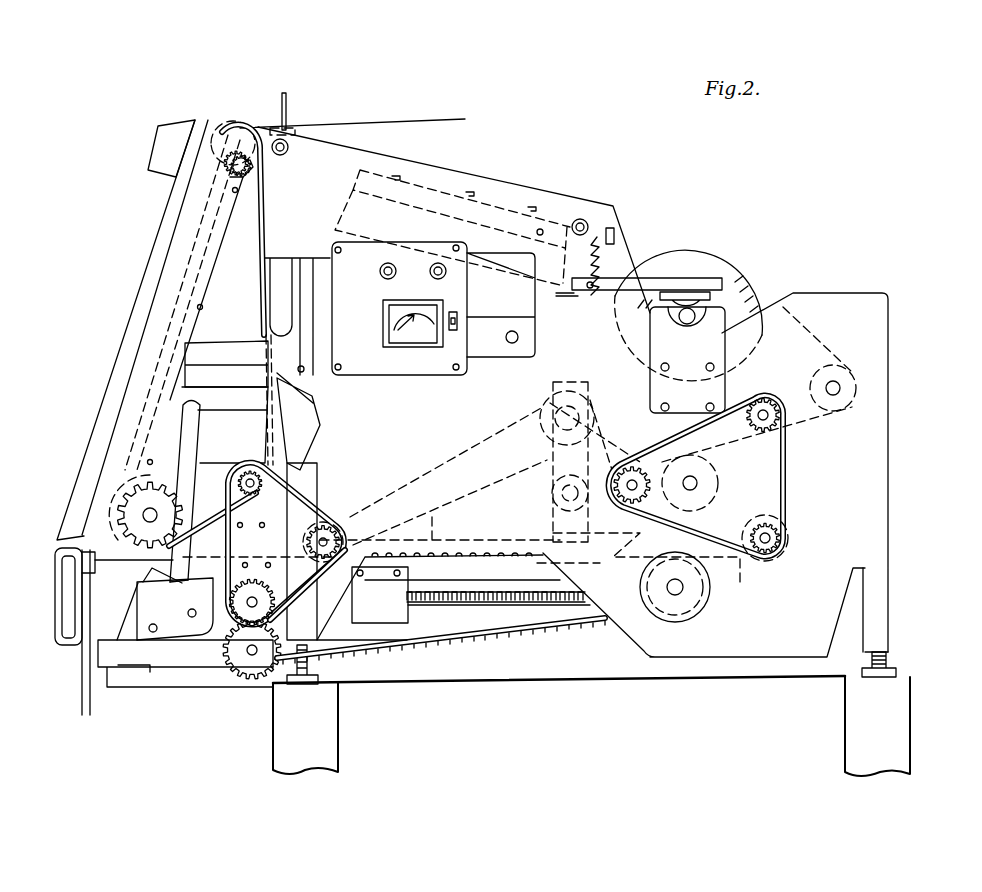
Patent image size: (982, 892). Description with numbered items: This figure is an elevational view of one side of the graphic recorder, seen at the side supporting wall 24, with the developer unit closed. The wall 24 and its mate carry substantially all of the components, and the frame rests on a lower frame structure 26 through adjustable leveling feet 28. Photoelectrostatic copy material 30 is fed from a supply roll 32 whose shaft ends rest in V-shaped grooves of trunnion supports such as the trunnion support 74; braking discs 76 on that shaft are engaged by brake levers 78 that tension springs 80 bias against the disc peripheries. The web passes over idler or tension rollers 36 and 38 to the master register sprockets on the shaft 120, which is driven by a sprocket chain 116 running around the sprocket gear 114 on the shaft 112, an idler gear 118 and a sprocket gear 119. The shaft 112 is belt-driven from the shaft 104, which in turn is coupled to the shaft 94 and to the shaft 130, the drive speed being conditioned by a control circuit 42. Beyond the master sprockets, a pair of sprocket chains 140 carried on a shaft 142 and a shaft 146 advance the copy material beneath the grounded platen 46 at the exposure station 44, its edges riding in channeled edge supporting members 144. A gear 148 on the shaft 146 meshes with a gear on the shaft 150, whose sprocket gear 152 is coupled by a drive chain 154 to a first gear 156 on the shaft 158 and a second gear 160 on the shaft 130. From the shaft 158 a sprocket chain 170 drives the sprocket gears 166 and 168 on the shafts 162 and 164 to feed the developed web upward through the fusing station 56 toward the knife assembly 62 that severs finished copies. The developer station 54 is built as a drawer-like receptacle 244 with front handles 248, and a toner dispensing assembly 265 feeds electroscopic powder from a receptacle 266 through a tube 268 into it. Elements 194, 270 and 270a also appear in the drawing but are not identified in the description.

The side supporting wall 24 is at (887, 293).
The lower frame structure 26 is at (275, 762).
The adjustable leveling feet 28 is at (882, 658).
The photoelectrostatic copy material 30 is at (410, 118).
The supply roll 32 is at (700, 250).
The idler or tension roller 36 is at (856, 390).
The idler or tension roller 38 is at (718, 486).
The control circuit 42 is at (508, 202).
The exposure station 44 is at (638, 689).
The grounded platen 46 is at (391, 402).
The developer station 54 is at (53, 548).
The fixing or fusing station 56 is at (96, 281).
The knife assembly 62 is at (276, 83).
The trunnion support 74 is at (687, 360).
The braking disc 76 is at (690, 293).
The brake lever 78 is at (620, 285).
The tension spring 80 is at (600, 235).
The shaft 94 is at (562, 500).
The shaft 104 is at (547, 410).
The shaft 112 is at (631, 490).
The sprocket gear 114 is at (638, 465).
The sprocket chain 116 is at (786, 468).
The idler gear 118 is at (766, 405).
The sprocket gear 119 is at (785, 527).
The shaft 120 is at (780, 540).
The shaft 130 is at (292, 525).
The sprocket chains 140 is at (452, 563).
The shaft 142 is at (673, 590).
The edge supporting member 144 is at (508, 565).
The shaft 146 is at (240, 670).
The gear 148 is at (255, 662).
The shaft 150 is at (228, 618).
The sprocket gear 152 is at (250, 602).
The drive chain 154 is at (312, 480).
The first gear 156 is at (275, 462).
The shaft 158 is at (275, 445).
The second gear 160 is at (328, 540).
The shaft 162 is at (150, 513).
The shaft 164 is at (262, 128).
The sprocket gear 166 is at (160, 487).
The sprocket gear 168 is at (255, 165).
The sprocket chain 170 is at (268, 218).
The rack teeth 194 is at (475, 600).
The receptacle 244 is at (160, 635).
The front handles 248 is at (60, 592).
The toner dispensing assembly 265 is at (208, 357).
The receptacle 266 is at (195, 378).
The tube 268 is at (195, 428).
The arm 270 is at (160, 233).
The arm end block 270a is at (155, 147).